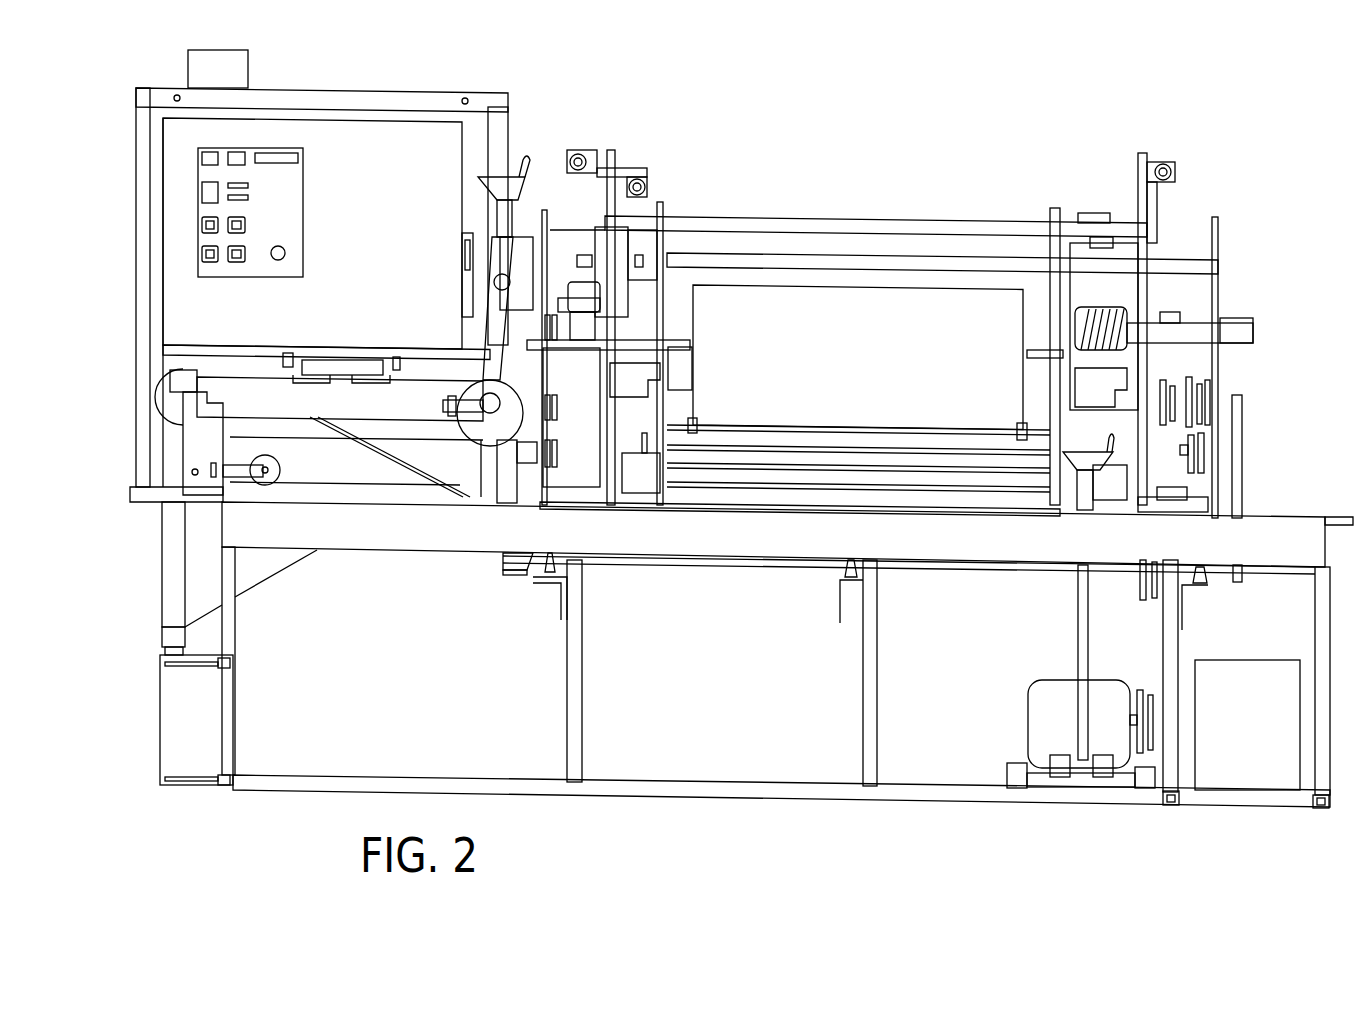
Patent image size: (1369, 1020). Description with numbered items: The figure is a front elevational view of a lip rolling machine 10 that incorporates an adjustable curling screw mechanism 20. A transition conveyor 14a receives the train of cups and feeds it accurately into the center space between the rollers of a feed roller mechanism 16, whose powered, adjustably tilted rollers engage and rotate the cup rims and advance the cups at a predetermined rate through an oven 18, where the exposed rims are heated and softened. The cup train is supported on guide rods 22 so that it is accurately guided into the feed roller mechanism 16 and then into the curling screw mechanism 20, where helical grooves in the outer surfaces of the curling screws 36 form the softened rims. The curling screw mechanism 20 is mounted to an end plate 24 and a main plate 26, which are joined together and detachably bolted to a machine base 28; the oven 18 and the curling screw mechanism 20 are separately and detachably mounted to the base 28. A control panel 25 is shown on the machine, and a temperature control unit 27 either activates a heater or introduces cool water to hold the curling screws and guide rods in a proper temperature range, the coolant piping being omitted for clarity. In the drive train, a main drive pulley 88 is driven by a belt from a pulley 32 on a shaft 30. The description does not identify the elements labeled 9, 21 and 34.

The lip rolling machine 10 is at (915, 150).
The control panel 25 is at (352, 111).
The transition conveyor 14a is at (338, 341).
The feed roller mechanism 16 is at (578, 147).
The oven 18 is at (944, 385).
The curling screw mechanism 20 is at (1187, 196).
The guide rods 22 is at (1030, 351).
The end plate 24 is at (1220, 228).
The main plate 26 is at (1136, 196).
The motor 9 is at (1090, 306).
The curling screws 36 is at (1108, 300).
The main drive pulley 88 is at (1240, 392).
The machine base 28 is at (1268, 518).
The shaft 30 is at (930, 576).
The drive motor 21 is at (1038, 680).
The temperature control unit 27 is at (1216, 668).
The pulley 32 is at (1249, 586).
The bracket 34 is at (523, 568).